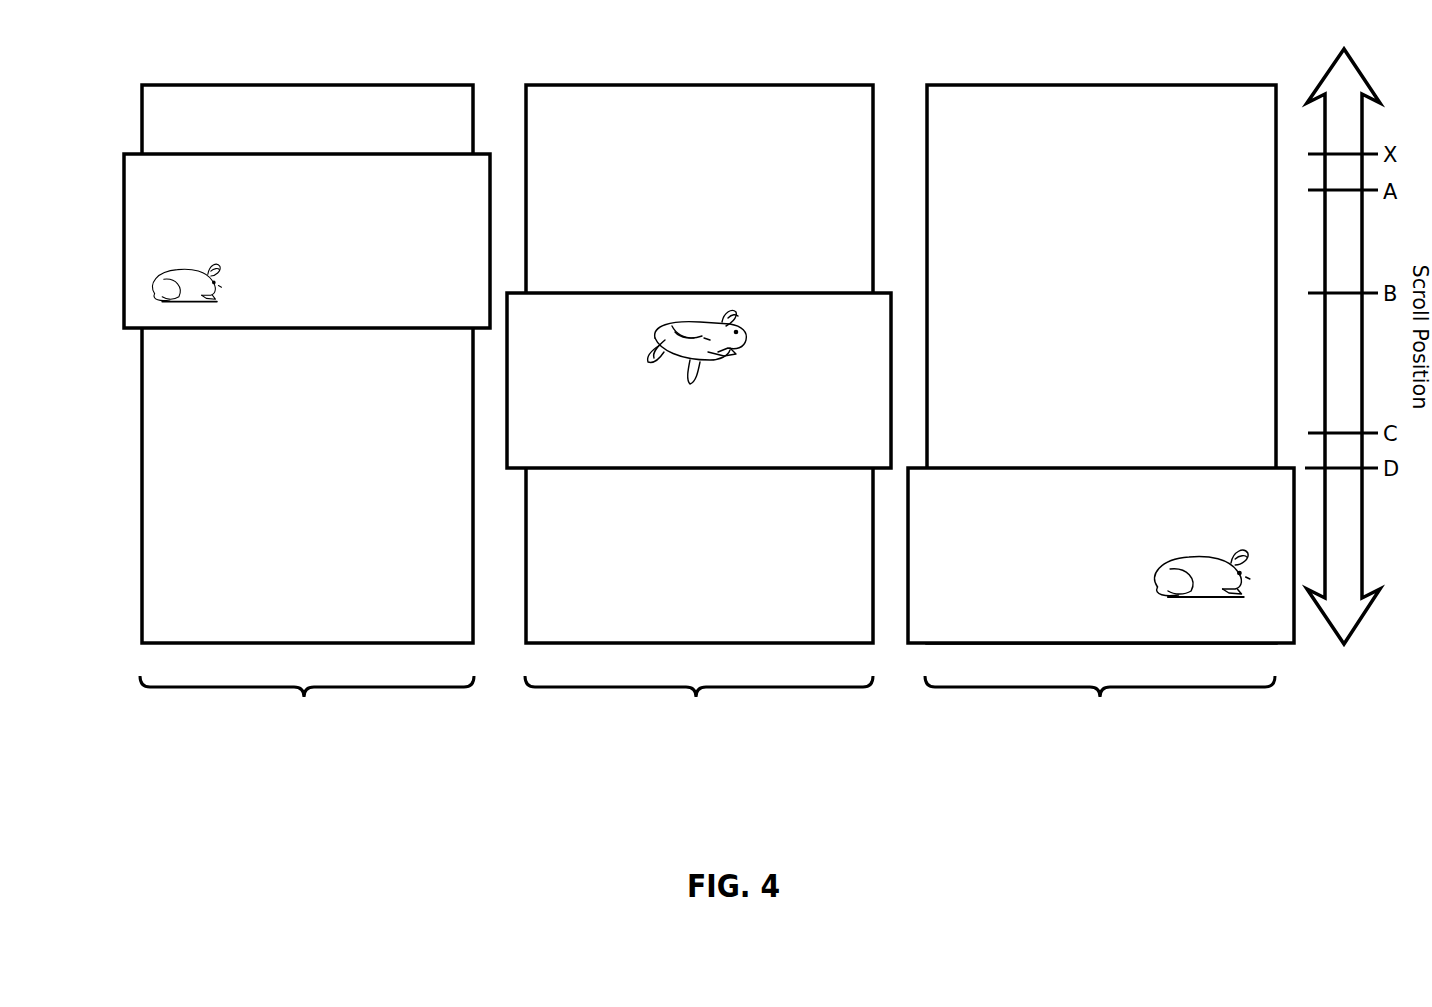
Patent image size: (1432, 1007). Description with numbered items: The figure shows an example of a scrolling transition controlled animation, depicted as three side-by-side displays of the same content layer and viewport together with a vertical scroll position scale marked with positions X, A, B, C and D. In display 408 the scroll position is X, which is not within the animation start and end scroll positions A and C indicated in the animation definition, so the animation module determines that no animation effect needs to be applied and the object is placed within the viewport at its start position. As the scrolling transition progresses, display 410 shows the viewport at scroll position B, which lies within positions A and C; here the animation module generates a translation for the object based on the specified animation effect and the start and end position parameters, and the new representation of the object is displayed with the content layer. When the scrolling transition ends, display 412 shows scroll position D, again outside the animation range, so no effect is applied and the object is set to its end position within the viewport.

The display 408 is at (307, 713).
The display 410 is at (699, 713).
The display 412 is at (1100, 713).